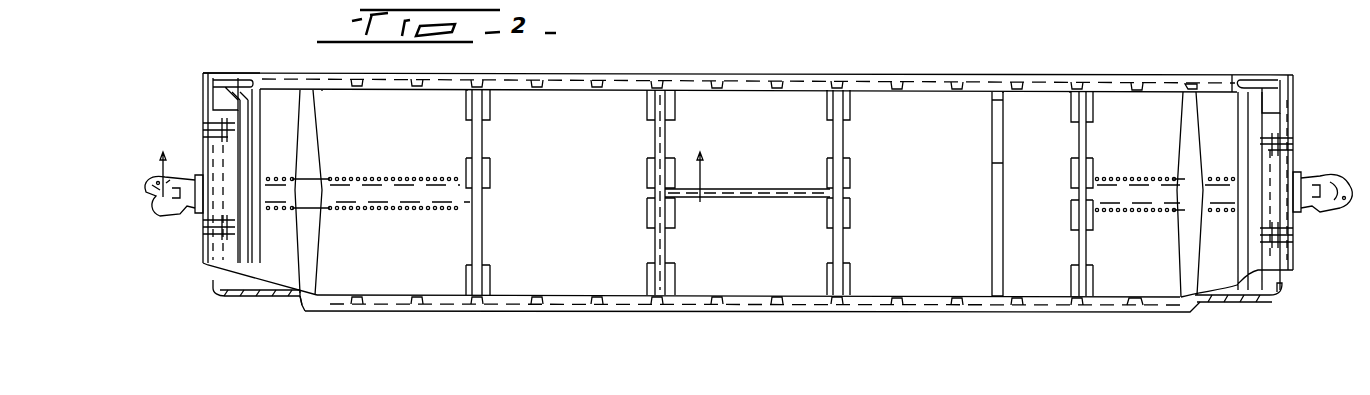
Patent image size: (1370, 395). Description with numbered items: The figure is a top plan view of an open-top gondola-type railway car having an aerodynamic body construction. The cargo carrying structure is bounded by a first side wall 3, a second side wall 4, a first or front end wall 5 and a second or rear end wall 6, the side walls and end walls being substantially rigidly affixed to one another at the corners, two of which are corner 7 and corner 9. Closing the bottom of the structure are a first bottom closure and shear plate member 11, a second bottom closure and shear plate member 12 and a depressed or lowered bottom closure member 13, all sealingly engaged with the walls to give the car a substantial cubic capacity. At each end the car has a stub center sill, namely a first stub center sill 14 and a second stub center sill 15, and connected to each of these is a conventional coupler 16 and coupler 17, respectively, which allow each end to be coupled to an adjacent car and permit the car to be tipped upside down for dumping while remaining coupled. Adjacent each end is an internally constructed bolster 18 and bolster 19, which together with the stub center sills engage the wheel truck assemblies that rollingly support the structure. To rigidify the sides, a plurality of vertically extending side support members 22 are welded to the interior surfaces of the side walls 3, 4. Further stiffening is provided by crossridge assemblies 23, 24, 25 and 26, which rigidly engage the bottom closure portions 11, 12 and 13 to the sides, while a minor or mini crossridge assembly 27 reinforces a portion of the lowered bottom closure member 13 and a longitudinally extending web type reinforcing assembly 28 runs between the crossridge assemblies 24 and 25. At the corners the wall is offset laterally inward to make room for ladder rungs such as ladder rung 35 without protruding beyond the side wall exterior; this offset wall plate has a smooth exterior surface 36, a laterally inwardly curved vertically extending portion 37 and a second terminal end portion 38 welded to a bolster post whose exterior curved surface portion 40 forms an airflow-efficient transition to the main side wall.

The first side wall 3 is at (988, 323).
The second side wall 4 is at (940, 89).
The first or front end wall 5 is at (208, 160).
The second or rear end wall 6 is at (1276, 130).
The corner 7 is at (222, 82).
The corner 9 is at (1258, 82).
The first bottom closure and shear plate member 11 is at (440, 112).
The second bottom closure and shear plate member 12 is at (1106, 112).
The depressed or lowered bottom closure member 13 is at (745, 112).
The first stub center sill 14 is at (288, 213).
The second stub center sill 15 is at (1234, 178).
The coupler 16 is at (183, 216).
The coupler 17 is at (1328, 176).
The bolster 18 is at (318, 150).
The bolster 19 is at (1182, 125).
The vertically extending side support members 22 is at (597, 74).
The crossridge assembly 23 is at (490, 274).
The crossridge assembly 24 is at (665, 276).
The crossridge assembly 25 is at (850, 275).
The crossridge assembly 26 is at (1090, 275).
The minor or mini crossridge assembly 27 is at (1003, 163).
The longitudinally extending web type reinforcing assembly 28 is at (752, 189).
The ladder rung 35 is at (240, 82).
The smooth outer or exterior surface 36 is at (258, 302).
The laterally inwardly curved vertically extending portion 37 is at (213, 284).
The second terminal end portion 38 is at (299, 302).
The exterior curved surface portion 40 is at (305, 307).